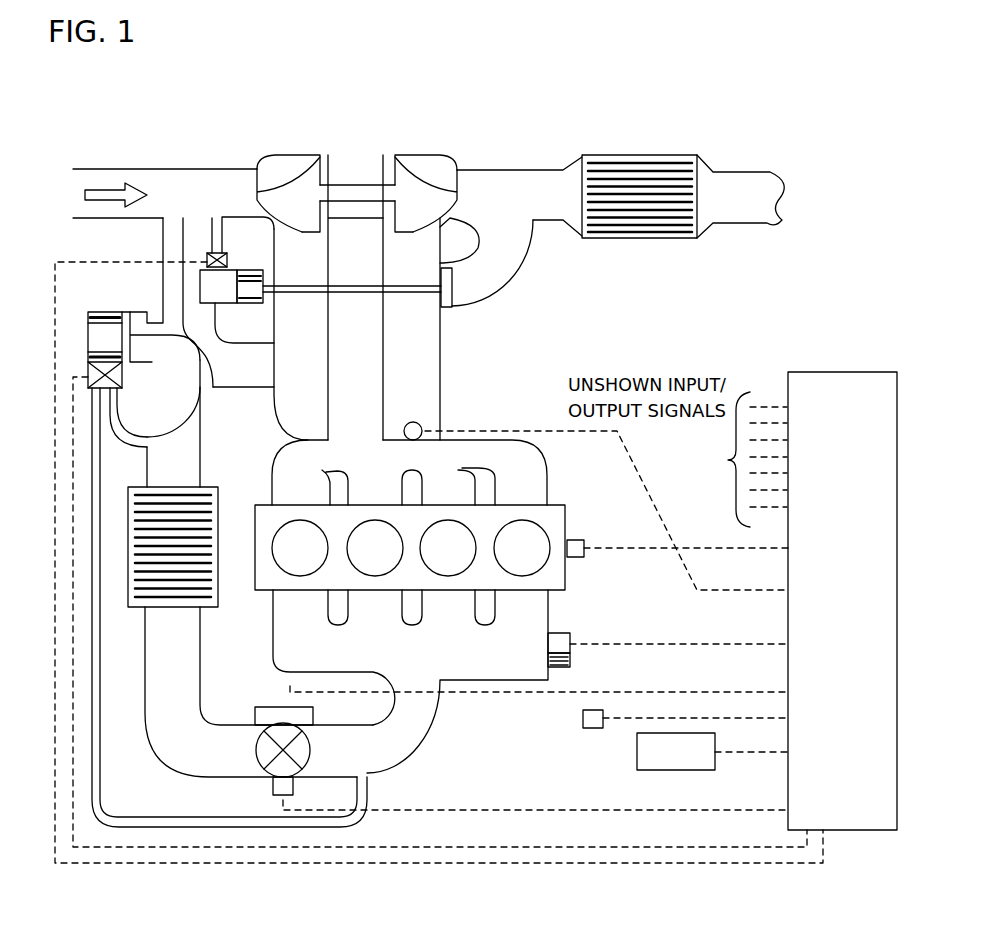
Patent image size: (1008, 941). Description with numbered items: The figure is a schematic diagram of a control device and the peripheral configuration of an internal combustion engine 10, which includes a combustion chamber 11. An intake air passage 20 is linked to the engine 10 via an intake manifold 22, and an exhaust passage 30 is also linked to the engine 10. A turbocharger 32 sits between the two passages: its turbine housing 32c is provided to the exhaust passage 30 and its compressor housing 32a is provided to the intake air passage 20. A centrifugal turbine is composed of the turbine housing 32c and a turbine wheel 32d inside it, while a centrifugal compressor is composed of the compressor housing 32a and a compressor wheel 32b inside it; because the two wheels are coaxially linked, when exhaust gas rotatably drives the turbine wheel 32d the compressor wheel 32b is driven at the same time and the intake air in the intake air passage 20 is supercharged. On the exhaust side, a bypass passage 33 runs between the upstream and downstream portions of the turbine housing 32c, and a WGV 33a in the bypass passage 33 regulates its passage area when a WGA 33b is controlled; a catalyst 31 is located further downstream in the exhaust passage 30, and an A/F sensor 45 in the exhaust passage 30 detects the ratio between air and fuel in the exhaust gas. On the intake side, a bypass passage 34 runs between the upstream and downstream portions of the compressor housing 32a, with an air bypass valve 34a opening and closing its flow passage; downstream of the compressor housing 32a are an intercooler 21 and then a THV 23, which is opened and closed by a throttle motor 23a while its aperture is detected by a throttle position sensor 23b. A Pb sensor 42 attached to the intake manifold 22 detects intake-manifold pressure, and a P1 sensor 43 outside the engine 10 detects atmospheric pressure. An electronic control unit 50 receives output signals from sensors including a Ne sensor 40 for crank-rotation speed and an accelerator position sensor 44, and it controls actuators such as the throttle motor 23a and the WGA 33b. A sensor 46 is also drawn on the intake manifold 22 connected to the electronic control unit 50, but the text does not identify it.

The internal combustion engine 10 is at (568, 589).
The combustion chamber 11 is at (578, 522).
The intake air passage 20 is at (213, 168).
The intercooler 21 is at (130, 610).
The intake manifold 22 is at (273, 630).
The THV 23 is at (258, 750).
The throttle motor 23a is at (266, 706).
The throttle position sensor 23b is at (273, 786).
The exhaust passage 30 is at (383, 422).
The catalyst 31 is at (612, 155).
The turbocharger 32 is at (356, 163).
The compressor housing 32a is at (285, 162).
The compressor wheel 32b is at (265, 167).
The turbine housing 32c is at (425, 150).
The turbine wheel 32d is at (442, 157).
The bypass passage 33 is at (517, 236).
The WGV 33a is at (465, 310).
The WGA 33b is at (246, 270).
The bypass passage 34 is at (152, 352).
The air bypass valve 34a is at (100, 305).
The Ne sensor 40 is at (585, 553).
The Pb sensor 42 is at (568, 628).
The P1 sensor 43 is at (582, 718).
The accelerator position sensor 44 is at (636, 752).
The A/F sensor 45 is at (422, 427).
The intake temperature sensor 46 is at (572, 665).
The electronic control unit 50 is at (828, 372).